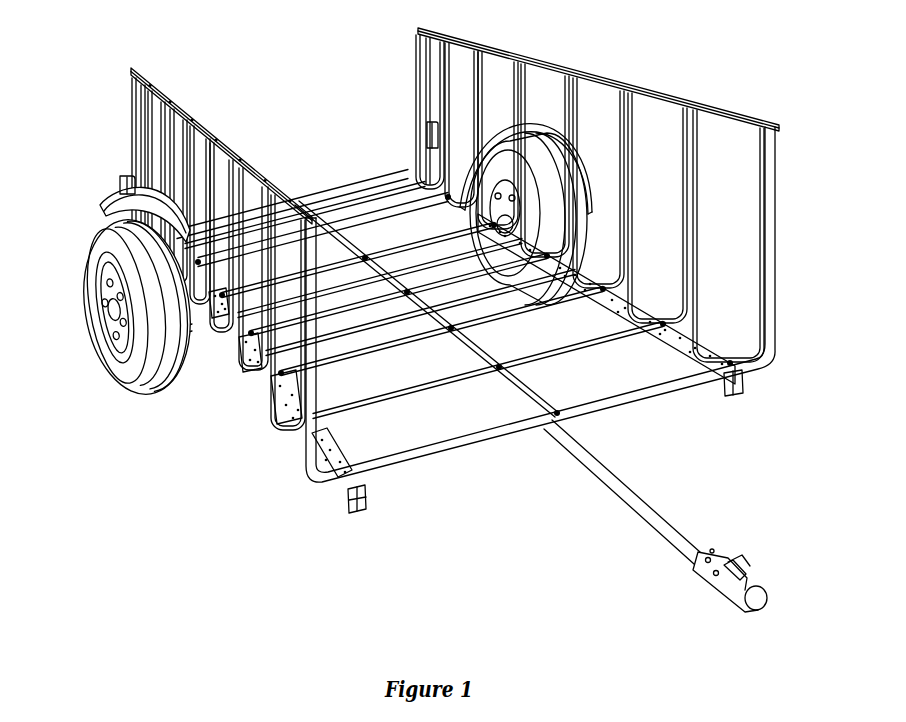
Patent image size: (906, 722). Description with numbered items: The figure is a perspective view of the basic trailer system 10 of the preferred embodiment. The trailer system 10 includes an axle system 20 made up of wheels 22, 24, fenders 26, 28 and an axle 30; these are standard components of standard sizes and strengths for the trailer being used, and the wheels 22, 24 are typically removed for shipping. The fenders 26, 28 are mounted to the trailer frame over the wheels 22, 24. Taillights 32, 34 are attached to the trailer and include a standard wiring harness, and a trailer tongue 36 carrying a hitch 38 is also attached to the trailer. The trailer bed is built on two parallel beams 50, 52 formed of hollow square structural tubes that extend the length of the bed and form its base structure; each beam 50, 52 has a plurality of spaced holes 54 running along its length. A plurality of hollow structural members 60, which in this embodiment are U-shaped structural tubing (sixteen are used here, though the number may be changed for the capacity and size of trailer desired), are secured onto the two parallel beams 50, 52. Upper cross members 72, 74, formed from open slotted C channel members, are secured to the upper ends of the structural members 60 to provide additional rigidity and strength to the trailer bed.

The trailer system 10 is at (167, 533).
The axle system 20 is at (205, 385).
The wheel 22 is at (123, 373).
The wheel 24 is at (587, 203).
The fender 26 is at (107, 197).
The fender 28 is at (582, 158).
The axle 30 is at (240, 400).
The taillight 32 is at (120, 160).
The taillight 34 is at (400, 120).
The trailer tongue 36 is at (607, 517).
The hitch 38 is at (698, 585).
The parallel beam 50 is at (355, 517).
The parallel beam 52 is at (742, 393).
The spaced holes 54 is at (338, 443).
The hollow structural members 60 is at (703, 273).
The upper cross member 72 is at (185, 97).
The right top rail 74 is at (570, 63).